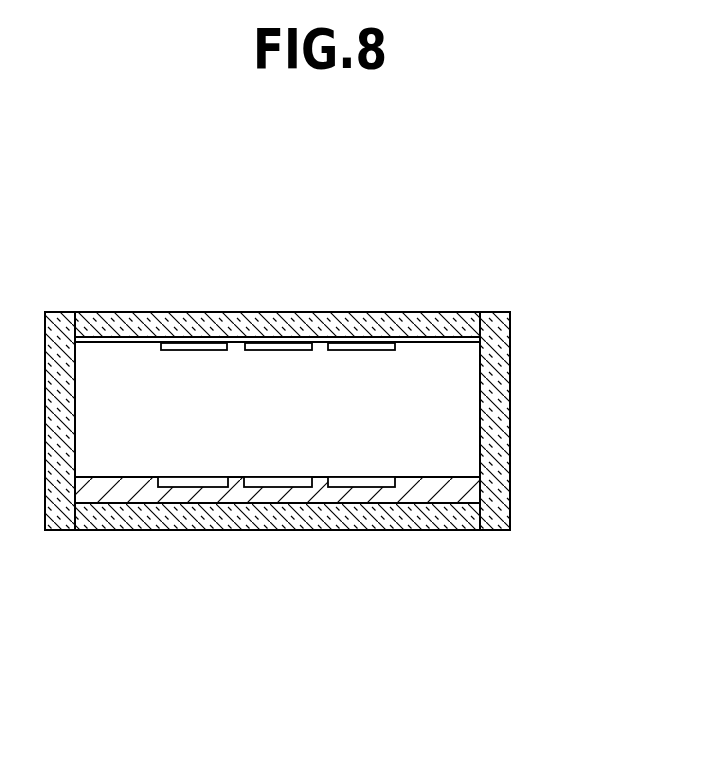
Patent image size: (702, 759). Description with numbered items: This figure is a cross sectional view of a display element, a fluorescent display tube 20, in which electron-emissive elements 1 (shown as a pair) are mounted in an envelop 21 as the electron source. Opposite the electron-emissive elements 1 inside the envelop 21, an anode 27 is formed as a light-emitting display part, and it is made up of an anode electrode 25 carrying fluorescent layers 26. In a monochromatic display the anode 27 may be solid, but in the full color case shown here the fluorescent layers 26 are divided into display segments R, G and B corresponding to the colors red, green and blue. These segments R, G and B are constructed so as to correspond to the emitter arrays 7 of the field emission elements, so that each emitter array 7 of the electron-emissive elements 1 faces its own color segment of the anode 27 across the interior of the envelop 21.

The fluorescent display tube 20 is at (470, 212).
The envelop 21 is at (511, 398).
The anode electrode 25 is at (127, 343).
The fluorescent layers 26 is at (361, 342).
The anode 27 is at (108, 204).
The emitter arrays 7 is at (203, 488).
The electron-emissive elements 1 is at (157, 607).